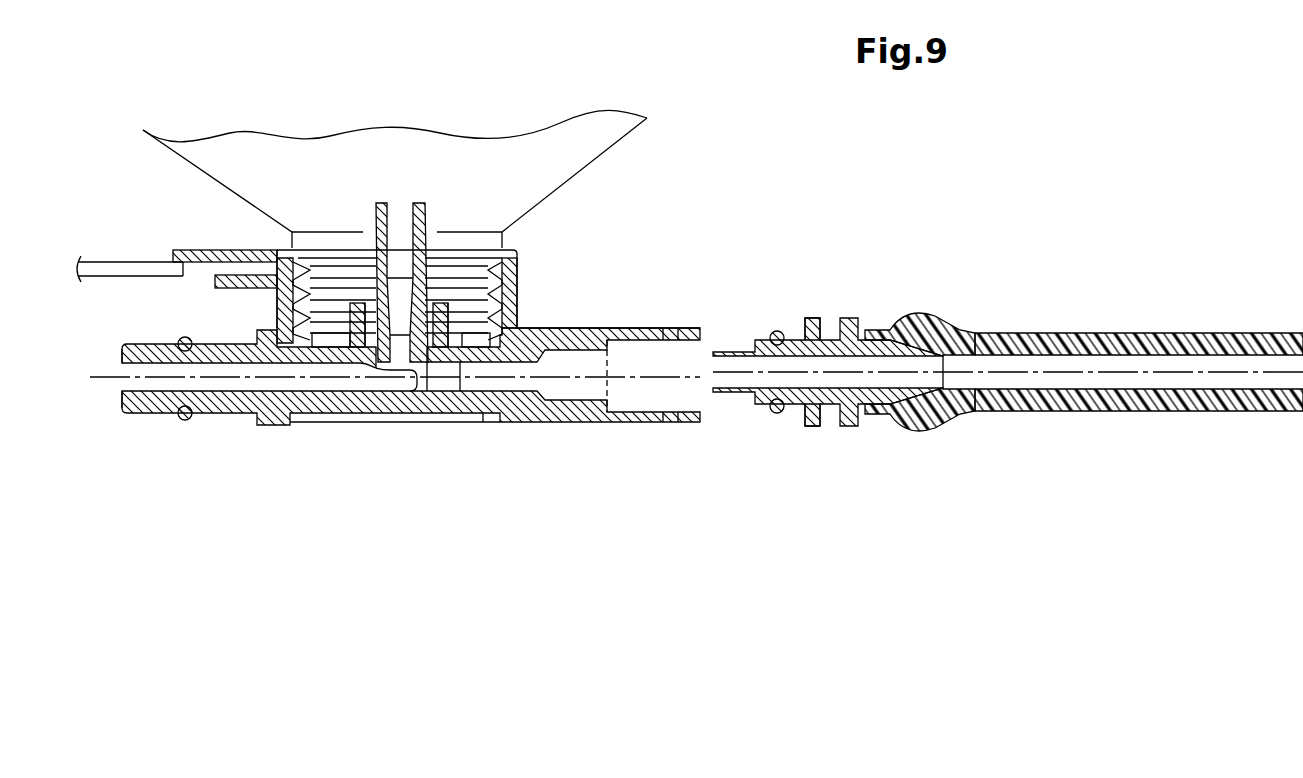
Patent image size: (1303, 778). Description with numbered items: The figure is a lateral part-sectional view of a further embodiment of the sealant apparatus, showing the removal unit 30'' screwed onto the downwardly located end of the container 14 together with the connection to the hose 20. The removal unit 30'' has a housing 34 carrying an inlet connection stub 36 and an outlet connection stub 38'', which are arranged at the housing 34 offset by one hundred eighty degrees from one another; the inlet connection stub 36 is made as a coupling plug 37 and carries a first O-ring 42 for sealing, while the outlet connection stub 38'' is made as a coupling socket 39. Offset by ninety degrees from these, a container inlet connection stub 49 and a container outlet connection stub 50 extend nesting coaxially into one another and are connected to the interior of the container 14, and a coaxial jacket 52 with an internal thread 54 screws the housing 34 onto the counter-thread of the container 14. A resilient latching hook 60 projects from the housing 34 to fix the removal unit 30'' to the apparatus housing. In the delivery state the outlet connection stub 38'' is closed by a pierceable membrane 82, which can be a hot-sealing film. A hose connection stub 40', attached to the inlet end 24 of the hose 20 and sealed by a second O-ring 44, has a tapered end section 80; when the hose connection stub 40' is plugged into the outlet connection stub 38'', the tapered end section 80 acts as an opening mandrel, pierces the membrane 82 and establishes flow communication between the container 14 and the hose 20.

The container 14 is at (242, 152).
The container inlet connection stub 49 is at (424, 214).
The latching hook 60 is at (190, 250).
The internal thread 54 is at (300, 287).
The container outlet connection stub 50 is at (447, 307).
The jacket 52 is at (520, 282).
The coupling socket 39 is at (647, 326).
The coupling plug 37 is at (140, 413).
The first O-ring 42 is at (185, 421).
The inlet connection stub 36 is at (240, 415).
The removal unit 30'' is at (411, 460).
The housing 34 is at (483, 414).
The outlet connection stub 38'' is at (563, 421).
The pierceable membrane 82 is at (608, 393).
The tapered end section 80 is at (732, 402).
The hose connection stub 40' is at (794, 329).
The second O-ring 44 is at (775, 416).
The inlet end 24 is at (853, 308).
The hose 20 is at (1098, 333).